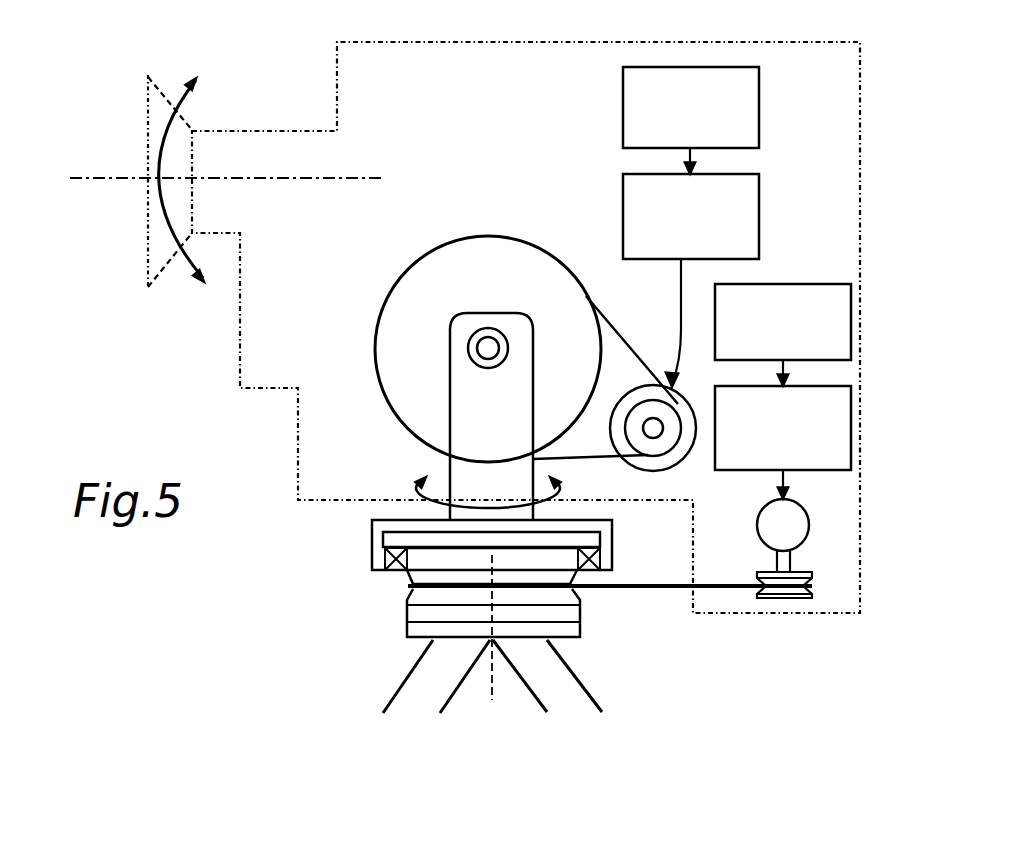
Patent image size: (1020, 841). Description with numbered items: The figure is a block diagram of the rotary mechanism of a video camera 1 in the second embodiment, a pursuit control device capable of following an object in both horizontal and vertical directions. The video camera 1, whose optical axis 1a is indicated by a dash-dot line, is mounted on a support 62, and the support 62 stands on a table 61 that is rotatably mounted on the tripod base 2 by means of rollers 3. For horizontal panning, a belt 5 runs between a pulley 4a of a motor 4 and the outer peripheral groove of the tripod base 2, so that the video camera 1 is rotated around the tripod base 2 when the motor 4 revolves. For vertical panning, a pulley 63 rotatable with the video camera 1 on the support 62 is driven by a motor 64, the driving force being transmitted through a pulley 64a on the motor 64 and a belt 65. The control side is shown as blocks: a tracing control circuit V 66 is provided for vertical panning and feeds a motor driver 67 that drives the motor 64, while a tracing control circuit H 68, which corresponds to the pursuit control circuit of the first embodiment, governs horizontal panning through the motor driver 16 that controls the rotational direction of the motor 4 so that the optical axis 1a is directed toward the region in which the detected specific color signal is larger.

The video camera 1 is at (337, 67).
The optical axis 1a is at (97, 180).
The tripod base 2 is at (550, 562).
The rollers 3 is at (397, 570).
The motor 4 is at (810, 525).
The pulley 4a is at (780, 598).
The belt 5 is at (672, 583).
The motor driver 16 is at (740, 470).
The table 61 is at (383, 538).
The support 62 is at (462, 395).
The pulley 63 is at (392, 312).
The motor 64 is at (655, 463).
The pulley 64a is at (617, 418).
The belt 65 is at (632, 348).
The tracing control circuit V 66 is at (760, 128).
The motor driver 67 is at (760, 212).
The tracing control circuit H 68 is at (798, 280).